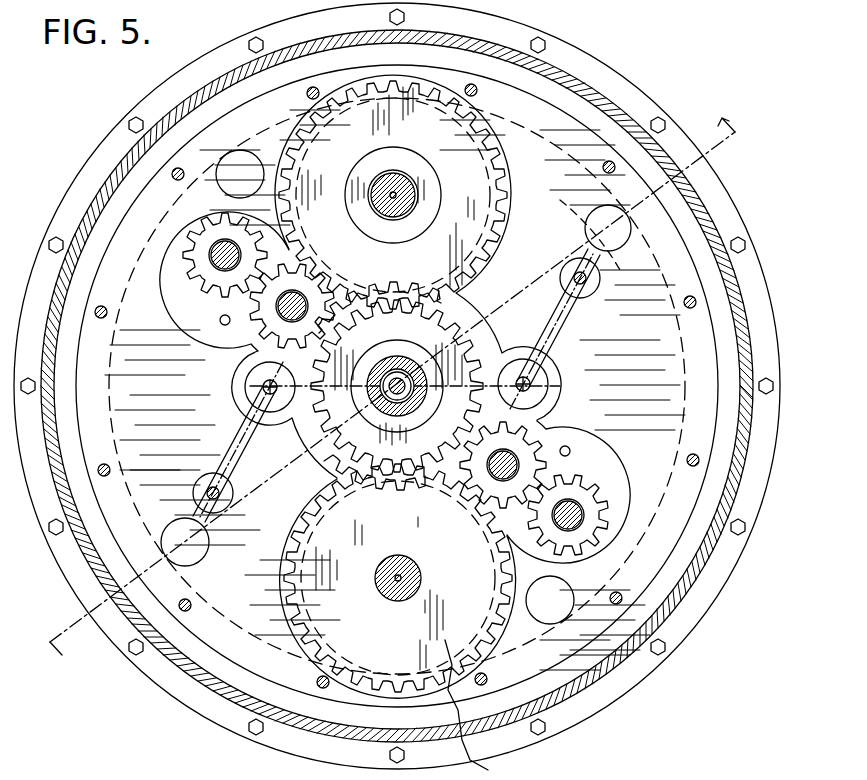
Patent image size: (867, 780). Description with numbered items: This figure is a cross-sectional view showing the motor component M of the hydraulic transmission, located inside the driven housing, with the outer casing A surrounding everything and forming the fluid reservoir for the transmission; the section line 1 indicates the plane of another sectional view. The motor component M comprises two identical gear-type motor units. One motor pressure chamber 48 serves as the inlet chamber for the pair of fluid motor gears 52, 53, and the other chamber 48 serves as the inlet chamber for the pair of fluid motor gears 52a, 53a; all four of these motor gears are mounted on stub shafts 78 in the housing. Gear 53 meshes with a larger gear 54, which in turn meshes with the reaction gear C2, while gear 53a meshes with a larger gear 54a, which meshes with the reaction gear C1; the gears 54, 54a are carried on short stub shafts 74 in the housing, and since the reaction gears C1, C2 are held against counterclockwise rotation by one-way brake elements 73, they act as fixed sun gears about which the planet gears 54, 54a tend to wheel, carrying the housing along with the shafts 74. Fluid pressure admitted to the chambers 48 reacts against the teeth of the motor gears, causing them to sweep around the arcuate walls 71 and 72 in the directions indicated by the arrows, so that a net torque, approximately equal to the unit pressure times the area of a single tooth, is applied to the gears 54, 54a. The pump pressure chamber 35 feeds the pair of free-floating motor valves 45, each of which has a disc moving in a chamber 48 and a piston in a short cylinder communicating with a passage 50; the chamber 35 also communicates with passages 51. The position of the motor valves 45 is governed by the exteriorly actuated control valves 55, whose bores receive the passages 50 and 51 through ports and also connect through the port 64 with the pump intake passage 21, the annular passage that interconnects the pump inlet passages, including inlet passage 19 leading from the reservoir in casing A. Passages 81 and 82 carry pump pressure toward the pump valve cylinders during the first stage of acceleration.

The section line 1- 1 is at (396, 392).
The pump inlet passage 19 is at (550, 618).
The annular passage 21 is at (517, 129).
The pump outlet or pressure chamber 35 is at (285, 511).
The motor valve 45 is at (245, 387).
The motor pressure chamber 48 is at (218, 370).
The passage 50 is at (565, 342).
The passage 51 is at (553, 282).
The fluid motor gear 52 is at (606, 501).
The fluid motor gear 52a is at (188, 259).
The fluid motor gear 53 is at (483, 490).
The fluid motor gear 53a is at (323, 281).
The gear 54 is at (386, 535).
The gear 54a is at (446, 143).
The control valve 55 is at (193, 493).
The port 64 is at (584, 240).
The arcuate wall 71 is at (186, 279).
The arcuate wall 72 is at (278, 395).
The one-way brake element 73 is at (299, 446).
The stub shaft 74 is at (414, 197).
The stub shaft 78 is at (210, 252).
The passage 81 is at (220, 320).
The passage 82 is at (570, 450).
The casing A is at (578, 695).
The reaction gear C1 is at (378, 386).
The reaction gear C2 is at (397, 386).
The motor component M is at (478, 710).